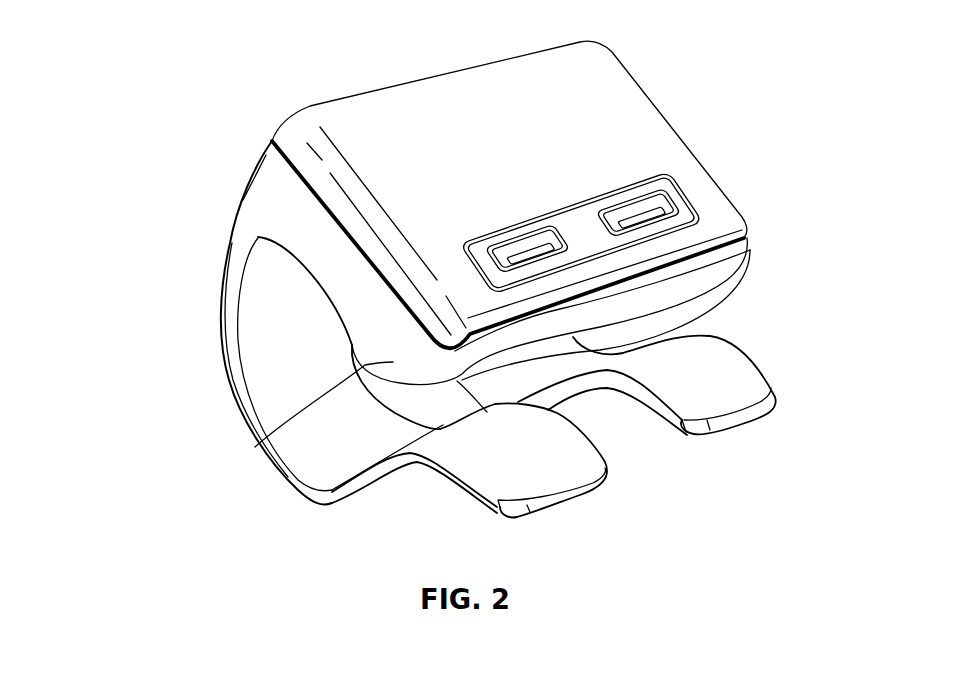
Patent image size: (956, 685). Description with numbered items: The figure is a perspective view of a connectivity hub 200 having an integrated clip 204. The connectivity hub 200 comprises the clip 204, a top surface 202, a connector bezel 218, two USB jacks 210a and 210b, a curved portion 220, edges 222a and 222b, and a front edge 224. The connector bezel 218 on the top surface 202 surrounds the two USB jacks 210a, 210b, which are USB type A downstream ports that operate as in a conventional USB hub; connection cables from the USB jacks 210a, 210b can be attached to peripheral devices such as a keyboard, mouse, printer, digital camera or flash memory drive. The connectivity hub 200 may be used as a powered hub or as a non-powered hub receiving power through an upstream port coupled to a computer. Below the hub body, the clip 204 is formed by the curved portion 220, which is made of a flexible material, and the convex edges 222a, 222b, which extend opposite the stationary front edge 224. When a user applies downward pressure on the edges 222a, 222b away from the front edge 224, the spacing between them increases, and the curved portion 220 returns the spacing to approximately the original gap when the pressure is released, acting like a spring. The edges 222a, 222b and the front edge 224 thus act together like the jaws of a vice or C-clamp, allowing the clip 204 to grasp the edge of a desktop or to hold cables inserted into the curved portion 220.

The connectivity hub 200 is at (148, 42).
The top surface 202 is at (377, 90).
The clip 204 is at (248, 190).
The USB jack 210a is at (520, 242).
The USB jack 210b is at (630, 205).
The connector bezel 218 is at (700, 213).
The curved portion 220 is at (242, 411).
The front edge 224 is at (255, 447).
The edge 222a is at (588, 490).
The edge 222b is at (770, 410).